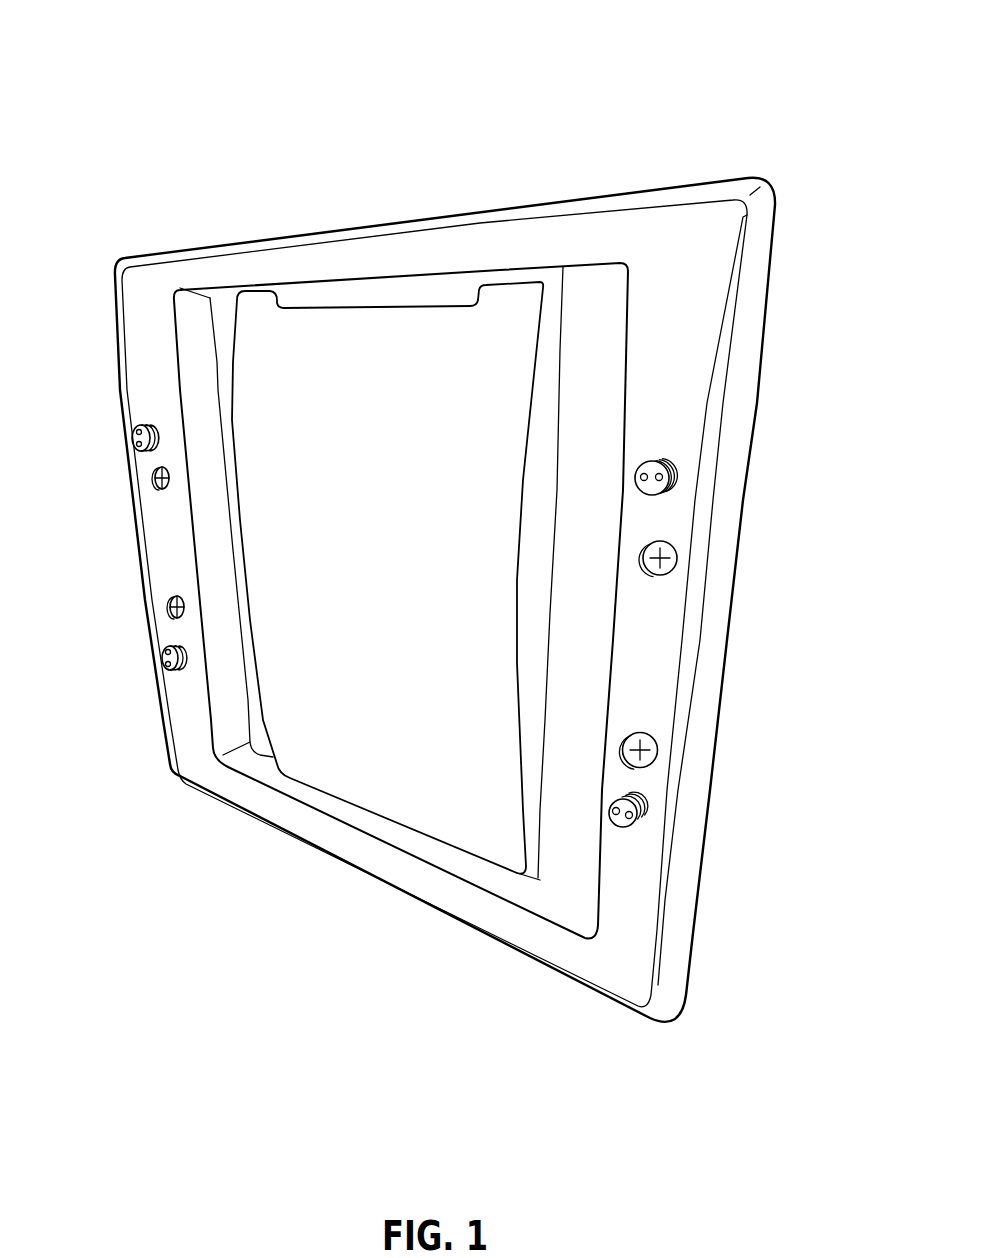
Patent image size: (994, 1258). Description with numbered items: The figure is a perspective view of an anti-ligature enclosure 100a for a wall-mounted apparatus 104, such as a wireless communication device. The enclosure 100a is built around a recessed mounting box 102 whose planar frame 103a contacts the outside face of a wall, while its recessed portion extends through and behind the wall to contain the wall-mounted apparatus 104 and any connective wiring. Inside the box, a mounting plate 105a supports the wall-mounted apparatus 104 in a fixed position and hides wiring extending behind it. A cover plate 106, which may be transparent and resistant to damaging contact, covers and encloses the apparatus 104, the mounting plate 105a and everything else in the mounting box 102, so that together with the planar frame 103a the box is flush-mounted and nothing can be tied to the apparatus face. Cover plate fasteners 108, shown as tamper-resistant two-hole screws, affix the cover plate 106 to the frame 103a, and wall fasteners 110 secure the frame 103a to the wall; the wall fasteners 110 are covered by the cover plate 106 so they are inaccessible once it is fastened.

The anti-ligature enclosure 100a is at (756, 66).
The recessed mounting box 102 is at (163, 787).
The planar frame 103a is at (673, 958).
The wall-mounted apparatus 104 is at (550, 617).
The mounting plate 105a is at (613, 296).
The cover plate 106 is at (716, 257).
The cover plate fasteners 108 is at (137, 437).
The wall fasteners 110 is at (155, 480).